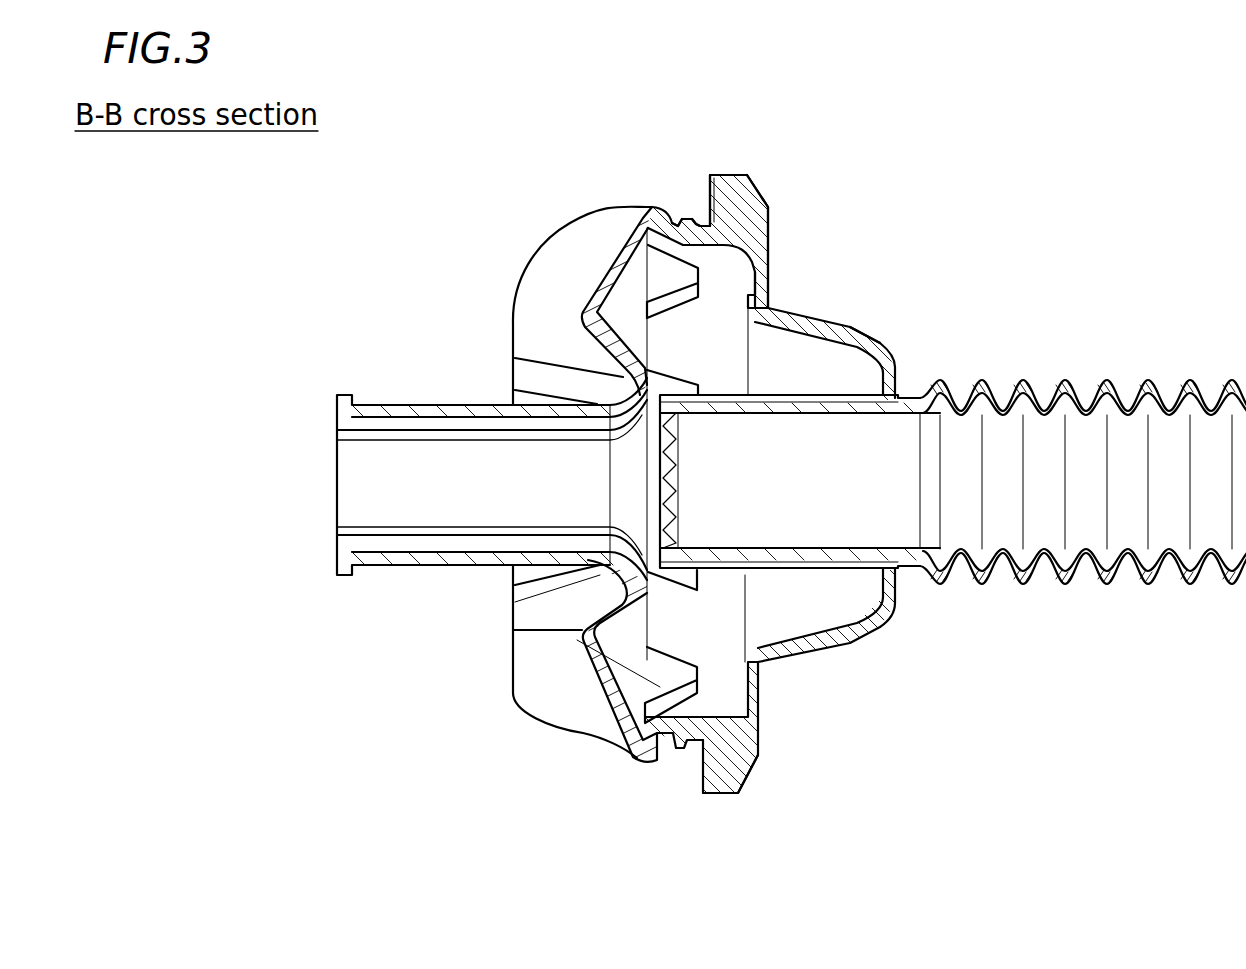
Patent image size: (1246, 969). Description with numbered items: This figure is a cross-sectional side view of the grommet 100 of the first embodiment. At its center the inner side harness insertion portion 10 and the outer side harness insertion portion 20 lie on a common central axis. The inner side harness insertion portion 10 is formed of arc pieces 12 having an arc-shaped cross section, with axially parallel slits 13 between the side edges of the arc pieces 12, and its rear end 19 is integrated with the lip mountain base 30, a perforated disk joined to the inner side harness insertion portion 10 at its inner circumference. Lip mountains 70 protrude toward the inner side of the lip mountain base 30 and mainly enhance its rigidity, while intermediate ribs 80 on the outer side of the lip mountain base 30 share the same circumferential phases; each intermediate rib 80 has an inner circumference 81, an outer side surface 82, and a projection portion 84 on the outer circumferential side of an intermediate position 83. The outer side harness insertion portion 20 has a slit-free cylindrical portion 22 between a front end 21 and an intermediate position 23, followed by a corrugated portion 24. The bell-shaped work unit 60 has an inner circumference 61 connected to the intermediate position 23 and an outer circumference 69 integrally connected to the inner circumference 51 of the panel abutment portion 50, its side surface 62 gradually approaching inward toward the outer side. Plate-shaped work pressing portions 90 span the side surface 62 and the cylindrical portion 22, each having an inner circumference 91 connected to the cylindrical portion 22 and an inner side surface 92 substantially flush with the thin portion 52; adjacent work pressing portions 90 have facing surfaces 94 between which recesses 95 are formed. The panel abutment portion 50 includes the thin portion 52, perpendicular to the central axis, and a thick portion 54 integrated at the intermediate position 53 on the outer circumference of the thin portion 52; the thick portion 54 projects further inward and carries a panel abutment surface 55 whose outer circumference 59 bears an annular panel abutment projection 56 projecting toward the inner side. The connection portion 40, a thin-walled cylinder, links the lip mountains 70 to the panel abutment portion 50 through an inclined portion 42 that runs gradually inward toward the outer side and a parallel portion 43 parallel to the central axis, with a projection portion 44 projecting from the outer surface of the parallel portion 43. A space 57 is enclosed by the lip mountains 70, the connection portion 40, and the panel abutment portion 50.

The pipe joint structure 100 is at (442, 102).
The inner side harness insertion portion 10 is at (439, 479).
The arc pieces 12 is at (357, 459).
The slits 13 is at (368, 486).
The rear end 19 is at (607, 501).
The outer side harness insertion portion 20 is at (953, 536).
The front end 21 is at (917, 460).
The cylindrical portion 22 is at (870, 480).
The intermediate position 23 is at (680, 502).
The corrugated portion 24 is at (1088, 500).
The lip mountain base 30 is at (583, 332).
The connection portion 40 is at (643, 137).
The inclined portion 42 is at (670, 218).
The parallel portion 43 is at (693, 228).
The projection portion 44 is at (686, 226).
The panel abutment portion 50 is at (838, 180).
The inner circumference 51 is at (846, 276).
The thin portion 52 is at (770, 240).
The intermediate position 53 is at (770, 213).
The thick portion 54 is at (745, 193).
The panel abutment surface 55 is at (686, 172).
The panel abutment projection 56 is at (700, 188).
The space 57 is at (770, 265).
The outer circumference 59 is at (728, 172).
The work unit 60 is at (826, 680).
The inner circumference 61 is at (895, 575).
The side surface 62 is at (833, 637).
The outer circumference 69 is at (795, 665).
The lip mountains 70 is at (573, 252).
The intermediate ribs 80 is at (501, 661).
The inner circumference 81 is at (625, 588).
The outer side surface 82 is at (567, 637).
The intermediate position 83 is at (577, 647).
The projection portion 84 is at (580, 677).
The work pressing portions 90 is at (938, 332).
The inner circumference 91 is at (805, 393).
The inner side surface 92 is at (752, 362).
The facing surfaces 94 is at (797, 347).
The recesses 95 is at (865, 335).